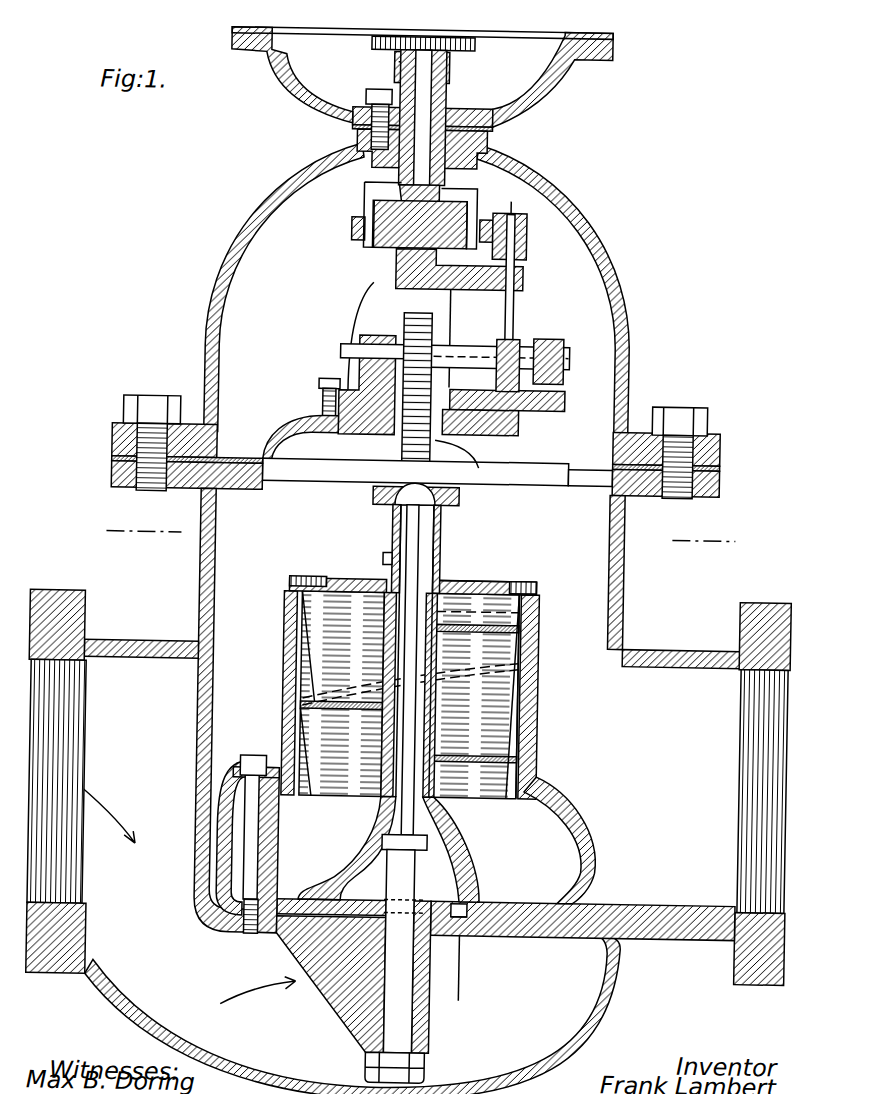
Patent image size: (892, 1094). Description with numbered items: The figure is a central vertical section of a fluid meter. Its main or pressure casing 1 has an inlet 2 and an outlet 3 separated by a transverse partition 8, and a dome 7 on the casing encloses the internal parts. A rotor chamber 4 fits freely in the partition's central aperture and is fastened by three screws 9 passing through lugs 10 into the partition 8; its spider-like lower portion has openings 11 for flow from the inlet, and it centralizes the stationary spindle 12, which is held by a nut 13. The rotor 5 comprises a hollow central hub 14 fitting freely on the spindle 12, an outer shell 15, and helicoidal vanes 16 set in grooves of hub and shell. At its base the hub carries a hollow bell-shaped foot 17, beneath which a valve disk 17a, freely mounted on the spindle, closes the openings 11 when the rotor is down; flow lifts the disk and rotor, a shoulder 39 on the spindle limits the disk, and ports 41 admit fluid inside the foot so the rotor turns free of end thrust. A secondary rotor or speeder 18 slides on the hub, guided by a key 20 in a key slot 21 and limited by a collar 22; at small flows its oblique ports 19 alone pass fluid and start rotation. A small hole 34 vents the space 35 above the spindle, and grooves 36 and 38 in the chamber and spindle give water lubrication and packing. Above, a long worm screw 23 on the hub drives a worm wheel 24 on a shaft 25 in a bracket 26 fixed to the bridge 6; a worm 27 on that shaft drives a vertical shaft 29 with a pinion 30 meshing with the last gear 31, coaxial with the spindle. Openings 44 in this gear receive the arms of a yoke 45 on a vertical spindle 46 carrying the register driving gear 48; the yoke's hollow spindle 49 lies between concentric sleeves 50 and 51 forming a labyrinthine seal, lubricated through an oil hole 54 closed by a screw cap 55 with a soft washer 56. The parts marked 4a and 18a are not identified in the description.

The main or pressure casing 1 is at (200, 574).
The inlet 2 is at (112, 782).
The outlet 3 is at (704, 793).
The rotor chamber 4 is at (286, 668).
The chamber wall 4a is at (535, 905).
The rotor 5 is at (290, 695).
The bridge 6 is at (278, 436).
The dome 7 is at (238, 232).
The transverse partition 8 is at (577, 930).
The screws 9 is at (250, 832).
The lugs 10 is at (226, 860).
The openings 11 is at (470, 917).
The spindle 12 is at (440, 556).
The nut 13 is at (374, 1066).
The central hub 14 is at (441, 532).
The outer shell 15 is at (532, 724).
The helicoidal vanes 16 is at (513, 692).
The bell-shaped foot 17 is at (483, 874).
The valve disk 17a is at (440, 906).
The secondary rotor or speeder 18 is at (487, 582).
The knurled ring 18a is at (292, 584).
The oblique ports 19 is at (338, 582).
The key 20 is at (383, 560).
The key slot 21 is at (392, 528).
The collar 22 is at (372, 497).
The worm screw 23 is at (400, 448).
The worm wheel 24 is at (428, 326).
The shaft 25 is at (360, 355).
The bracket 26 is at (393, 276).
The worm 27 is at (518, 346).
The vertical shaft 29 is at (510, 300).
The pinion 30 is at (522, 240).
The gear 31 is at (497, 215).
The small hole 34 is at (441, 516).
The space 35 is at (440, 480).
The grooves 36 is at (406, 622).
The grooves 38 is at (540, 654).
The shoulder 39 is at (432, 843).
The ports 41 is at (362, 912).
The openings 44 is at (365, 238).
The yoke 45 is at (358, 190).
The vertical spindle 46 is at (435, 165).
The gear 48 is at (460, 46).
The hollow spindle 49 is at (440, 118).
The sleeve 50 is at (488, 140).
The sleeve 51 is at (440, 96).
The oil hole 54 is at (450, 40).
The screw cap 55 is at (388, 58).
The soft washer 56 is at (388, 68).